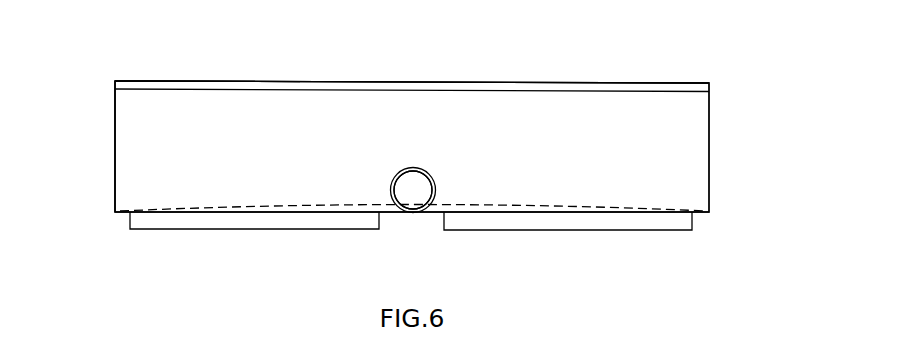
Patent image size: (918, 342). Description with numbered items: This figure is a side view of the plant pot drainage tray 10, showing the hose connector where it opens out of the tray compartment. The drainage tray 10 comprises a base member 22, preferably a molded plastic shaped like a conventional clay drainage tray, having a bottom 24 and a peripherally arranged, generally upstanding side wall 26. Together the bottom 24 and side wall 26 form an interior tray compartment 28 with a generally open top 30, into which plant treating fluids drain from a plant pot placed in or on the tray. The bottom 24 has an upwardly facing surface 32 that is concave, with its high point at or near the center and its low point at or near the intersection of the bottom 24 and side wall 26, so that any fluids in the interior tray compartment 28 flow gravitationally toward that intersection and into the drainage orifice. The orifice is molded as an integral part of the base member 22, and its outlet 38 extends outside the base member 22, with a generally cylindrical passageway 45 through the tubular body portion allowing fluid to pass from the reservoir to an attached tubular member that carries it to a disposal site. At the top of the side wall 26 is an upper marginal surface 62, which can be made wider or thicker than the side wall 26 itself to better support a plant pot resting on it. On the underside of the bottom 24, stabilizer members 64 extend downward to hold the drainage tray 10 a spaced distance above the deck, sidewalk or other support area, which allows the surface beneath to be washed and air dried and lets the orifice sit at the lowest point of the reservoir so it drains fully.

The drainage tray 10 is at (729, 98).
The base member 22 is at (690, 170).
The bottom 24 is at (580, 213).
The side wall 26 is at (115, 155).
The interior tray compartment 28 is at (466, 85).
The open top 30 is at (252, 82).
The upwardly facing surface 32 is at (558, 208).
The outlet 38 is at (395, 199).
The cylindrical passageway 45 is at (409, 193).
The upper marginal surface 62 is at (150, 83).
The stabilizer members 64 is at (230, 218).